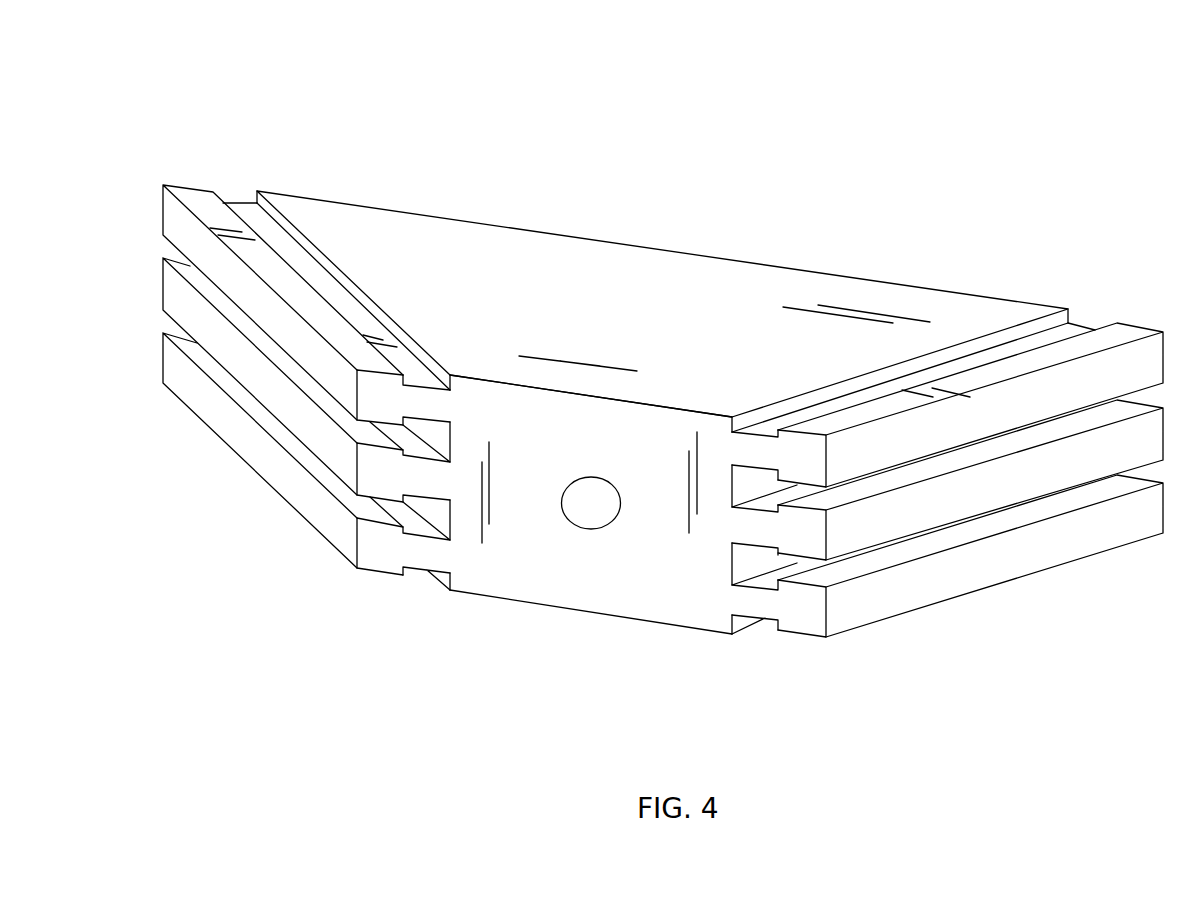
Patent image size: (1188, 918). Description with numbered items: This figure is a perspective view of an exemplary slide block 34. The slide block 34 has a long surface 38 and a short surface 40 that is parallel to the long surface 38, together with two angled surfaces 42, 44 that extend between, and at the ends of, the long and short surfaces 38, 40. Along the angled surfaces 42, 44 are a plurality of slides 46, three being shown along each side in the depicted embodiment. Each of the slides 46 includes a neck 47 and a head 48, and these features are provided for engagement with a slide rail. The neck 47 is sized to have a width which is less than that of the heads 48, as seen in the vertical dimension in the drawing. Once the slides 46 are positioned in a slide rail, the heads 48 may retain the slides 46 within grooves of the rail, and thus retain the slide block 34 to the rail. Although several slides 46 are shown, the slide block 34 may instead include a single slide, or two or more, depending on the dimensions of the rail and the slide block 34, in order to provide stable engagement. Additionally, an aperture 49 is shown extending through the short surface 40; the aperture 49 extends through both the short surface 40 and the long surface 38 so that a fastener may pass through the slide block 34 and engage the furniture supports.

The slide block 34 is at (925, 88).
The long surface 38 is at (684, 250).
The short surface 40 is at (598, 597).
The angled surface 42 is at (367, 292).
The angled surface 44 is at (932, 352).
The slide 46 is at (416, 601).
The neck 47 is at (430, 397).
The head 48 is at (805, 460).
The aperture 49 is at (598, 477).